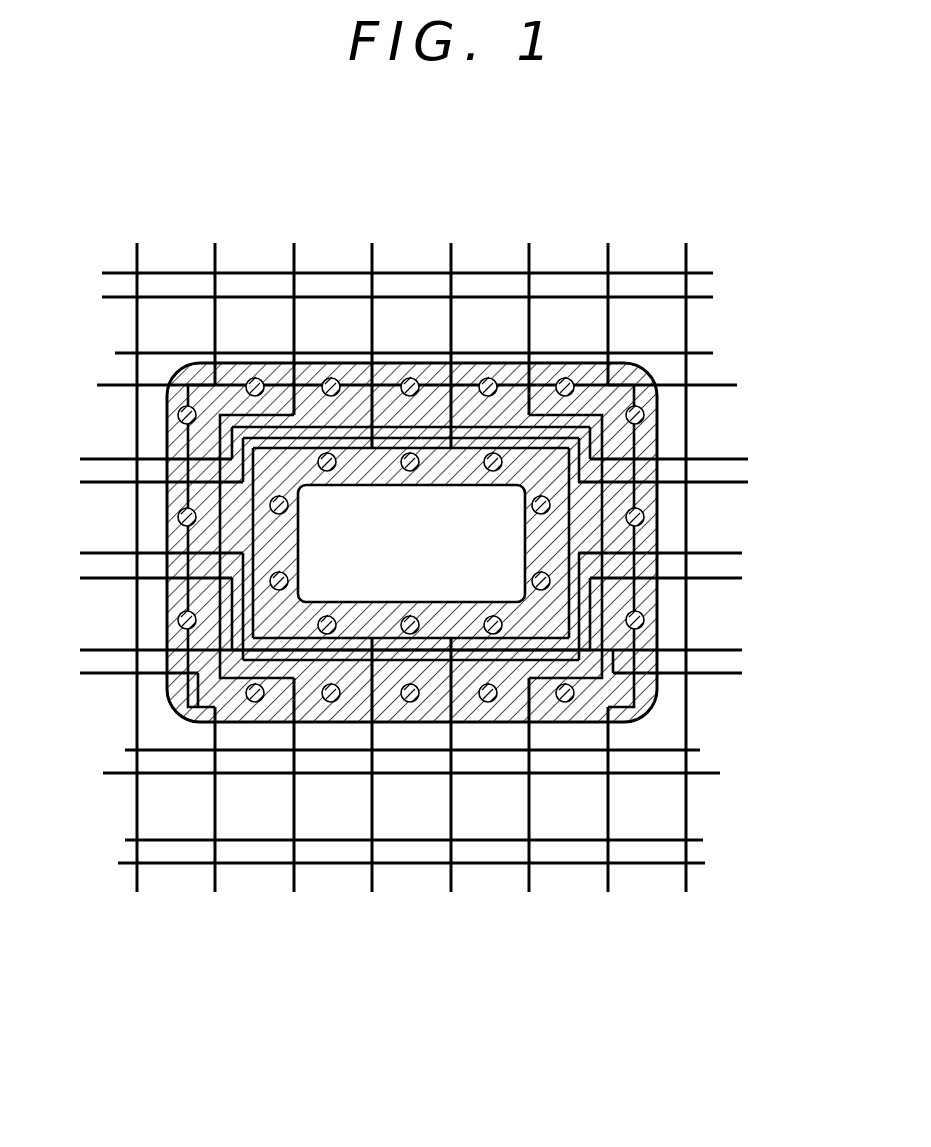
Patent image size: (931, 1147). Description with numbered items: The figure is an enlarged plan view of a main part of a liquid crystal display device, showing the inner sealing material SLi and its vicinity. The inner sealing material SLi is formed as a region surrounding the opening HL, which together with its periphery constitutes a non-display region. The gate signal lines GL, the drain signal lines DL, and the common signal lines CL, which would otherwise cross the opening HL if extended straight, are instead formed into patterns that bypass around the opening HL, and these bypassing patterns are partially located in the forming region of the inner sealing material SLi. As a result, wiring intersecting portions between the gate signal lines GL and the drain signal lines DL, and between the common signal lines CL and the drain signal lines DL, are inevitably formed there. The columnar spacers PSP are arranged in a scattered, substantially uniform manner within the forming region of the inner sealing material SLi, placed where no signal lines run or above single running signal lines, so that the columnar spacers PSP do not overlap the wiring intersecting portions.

The inner sealing material SLi is at (620, 362).
The opening HL is at (411, 543).
The drain signal lines DL is at (527, 262).
The common signal lines CL is at (722, 458).
The gate signal lines GL is at (732, 573).
The columnar spacers PSP is at (323, 452).